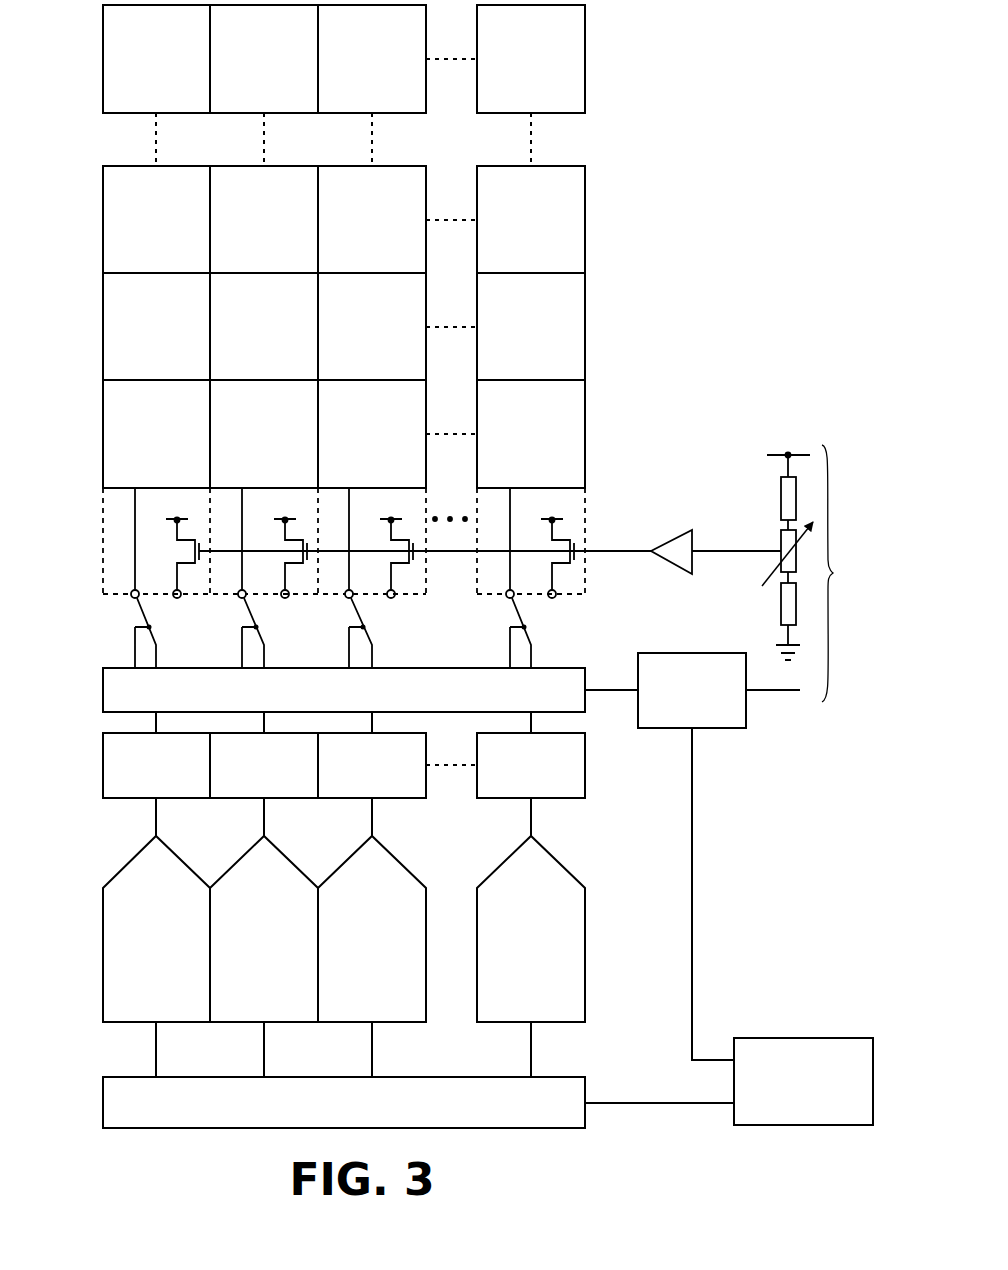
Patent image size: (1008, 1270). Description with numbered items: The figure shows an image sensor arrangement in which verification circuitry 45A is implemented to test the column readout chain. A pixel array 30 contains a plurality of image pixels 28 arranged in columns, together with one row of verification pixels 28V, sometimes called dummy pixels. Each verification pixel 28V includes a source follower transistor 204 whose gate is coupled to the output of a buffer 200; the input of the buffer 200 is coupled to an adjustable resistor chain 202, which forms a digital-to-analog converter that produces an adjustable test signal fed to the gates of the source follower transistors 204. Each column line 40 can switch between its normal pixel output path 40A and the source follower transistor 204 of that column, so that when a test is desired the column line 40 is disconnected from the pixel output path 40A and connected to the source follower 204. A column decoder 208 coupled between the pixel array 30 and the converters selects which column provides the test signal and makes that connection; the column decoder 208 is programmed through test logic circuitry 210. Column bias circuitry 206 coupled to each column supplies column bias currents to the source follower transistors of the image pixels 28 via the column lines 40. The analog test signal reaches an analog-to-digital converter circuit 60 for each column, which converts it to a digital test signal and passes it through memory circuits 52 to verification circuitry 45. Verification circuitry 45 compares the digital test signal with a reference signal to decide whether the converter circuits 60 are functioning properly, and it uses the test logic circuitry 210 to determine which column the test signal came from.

The image pixel 28 is at (544, 446).
The pixel array 30 is at (684, 74).
The verification pixel 28V is at (103, 516).
The pixel output path 40A is at (138, 508).
The source follower transistor 204 is at (190, 576).
The buffer 200 is at (673, 564).
The adjustable resistor chain 202 is at (788, 453).
The verification circuitry 45A is at (821, 573).
The column decoder 208 is at (103, 692).
The column bias circuitry 206 is at (103, 768).
The test logic circuitry 210 is at (727, 730).
The column line 40 is at (155, 824).
The analog-to-digital converter circuit 60 is at (542, 969).
The memory circuits 52 is at (103, 1106).
The verification circuitry 45 is at (820, 1040).